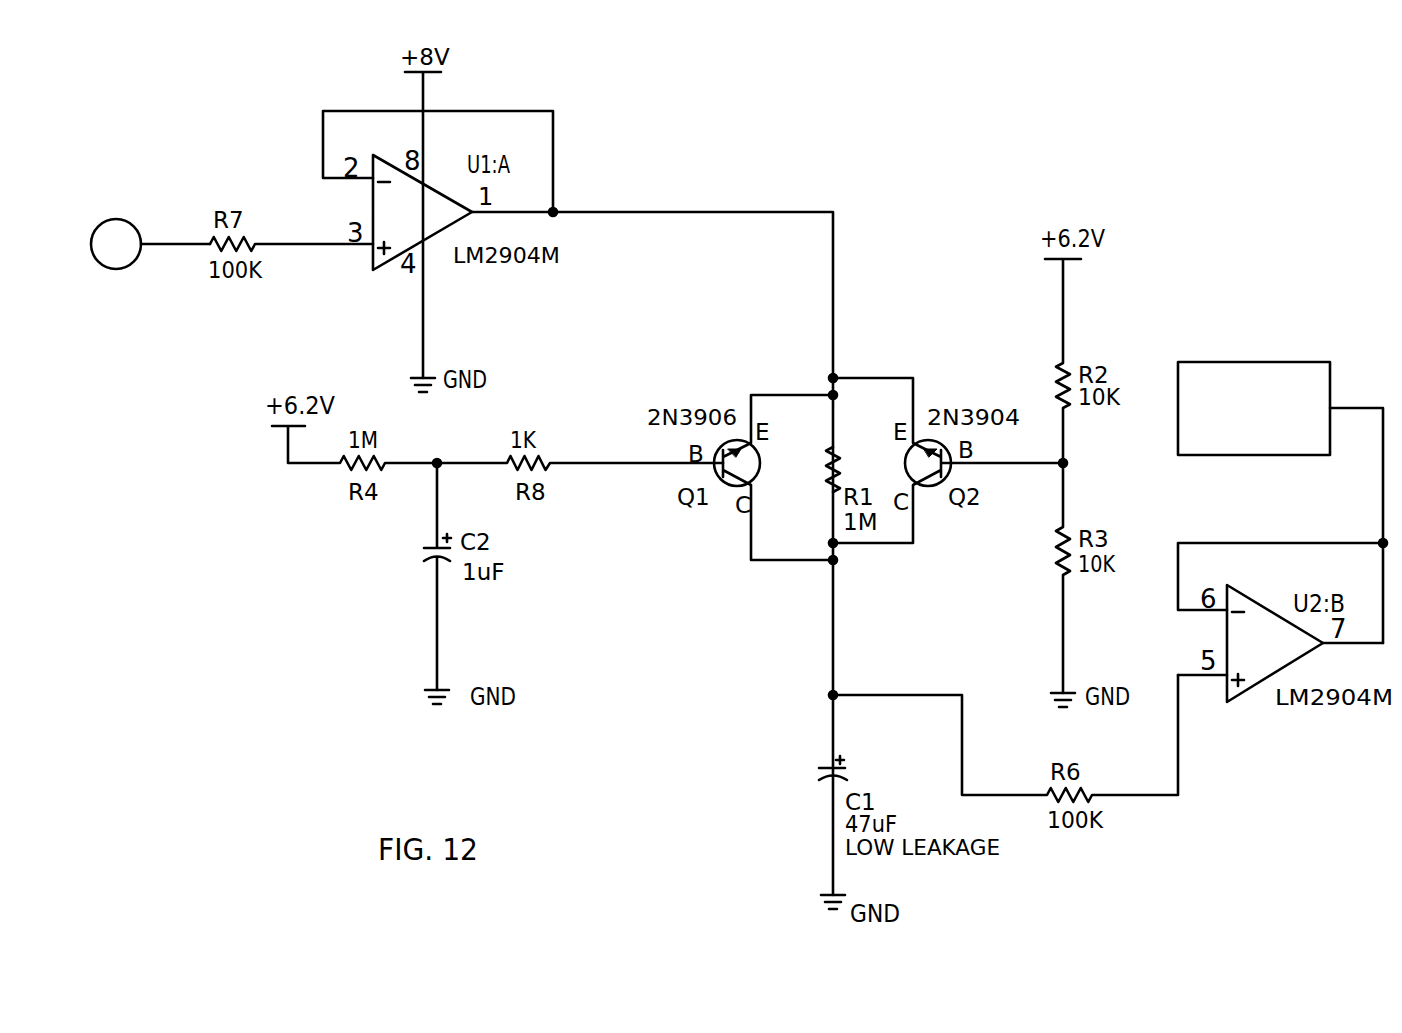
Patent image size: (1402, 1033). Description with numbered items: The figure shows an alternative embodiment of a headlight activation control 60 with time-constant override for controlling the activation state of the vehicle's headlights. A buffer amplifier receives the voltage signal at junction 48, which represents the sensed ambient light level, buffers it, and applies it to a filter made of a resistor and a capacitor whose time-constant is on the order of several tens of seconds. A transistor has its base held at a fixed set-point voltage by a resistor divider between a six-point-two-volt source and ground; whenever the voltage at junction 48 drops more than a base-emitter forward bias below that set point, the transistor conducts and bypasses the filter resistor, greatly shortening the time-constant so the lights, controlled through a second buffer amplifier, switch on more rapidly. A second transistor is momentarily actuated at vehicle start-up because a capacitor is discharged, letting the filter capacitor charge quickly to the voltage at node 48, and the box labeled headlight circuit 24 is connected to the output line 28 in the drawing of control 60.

The junction 48 is at (161, 243).
The headlight activation control 60 is at (938, 305).
The headlight circuit 24 is at (1235, 455).
The output line to headlight circuit 28 is at (1383, 497).